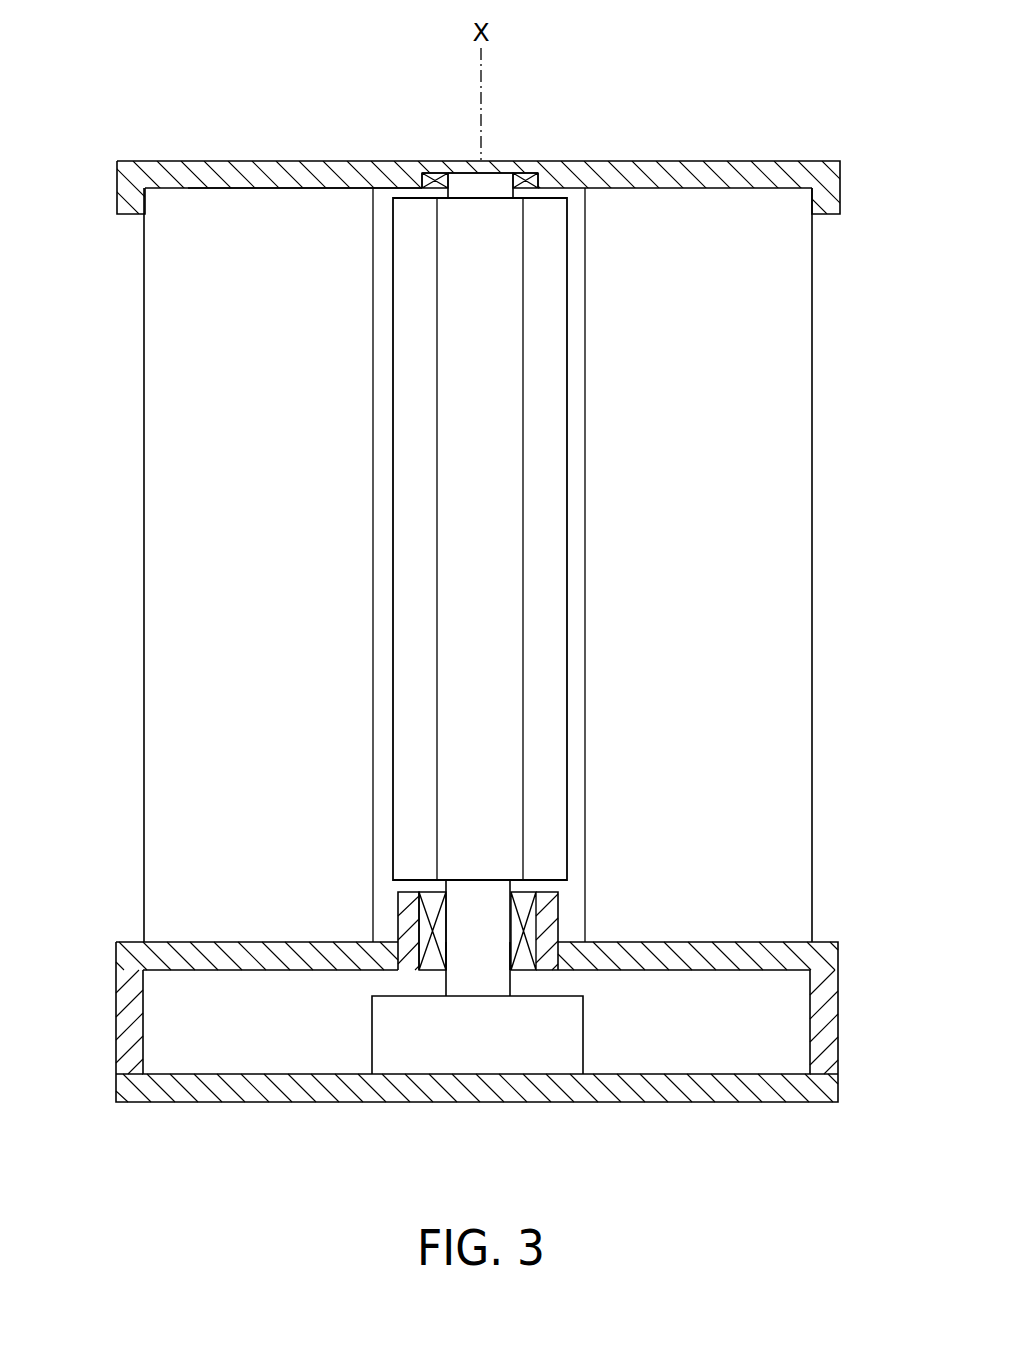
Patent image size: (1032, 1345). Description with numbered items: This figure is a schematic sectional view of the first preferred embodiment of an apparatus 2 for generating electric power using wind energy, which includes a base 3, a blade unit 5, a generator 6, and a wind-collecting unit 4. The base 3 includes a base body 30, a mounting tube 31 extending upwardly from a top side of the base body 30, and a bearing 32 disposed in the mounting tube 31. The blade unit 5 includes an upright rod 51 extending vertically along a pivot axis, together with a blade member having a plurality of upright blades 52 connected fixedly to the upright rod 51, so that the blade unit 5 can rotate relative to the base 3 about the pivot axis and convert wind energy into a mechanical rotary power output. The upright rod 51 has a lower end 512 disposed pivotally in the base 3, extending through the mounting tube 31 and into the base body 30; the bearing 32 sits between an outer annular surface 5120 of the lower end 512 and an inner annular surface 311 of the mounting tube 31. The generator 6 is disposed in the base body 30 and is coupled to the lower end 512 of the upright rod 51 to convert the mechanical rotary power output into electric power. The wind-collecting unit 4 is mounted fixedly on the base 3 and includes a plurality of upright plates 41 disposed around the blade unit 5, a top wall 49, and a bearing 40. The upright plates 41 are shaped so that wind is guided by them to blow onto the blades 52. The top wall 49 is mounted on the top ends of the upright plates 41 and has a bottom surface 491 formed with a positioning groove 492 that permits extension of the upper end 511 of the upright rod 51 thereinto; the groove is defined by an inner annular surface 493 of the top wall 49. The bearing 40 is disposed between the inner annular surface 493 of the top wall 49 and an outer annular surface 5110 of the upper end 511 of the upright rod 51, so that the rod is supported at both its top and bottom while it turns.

The apparatus for generating electric power using wind energy 2 is at (266, 133).
The base 3 is at (122, 926).
The base body 30 is at (830, 975).
The mounting tube 31 is at (403, 910).
The inner annular surface of the mounting tube 311 is at (418, 932).
The bearing 32 is at (532, 925).
The wind-collecting unit 4 is at (118, 345).
The bearing 40 is at (522, 177).
The upright plates 41 is at (153, 597).
The top wall 49 is at (683, 172).
The bottom surface 491 is at (785, 190).
The positioning groove 492 is at (495, 196).
The inner annular surface of the top wall 493 is at (551, 177).
The blade unit 5 is at (570, 568).
The upright rod 51 is at (517, 635).
The upper end of the upright rod 511 is at (463, 175).
The outer annular surface of the upper end 5110 is at (447, 193).
The lower end of the upright rod 512 is at (503, 979).
The outer annular surface of the lower end 5120 is at (511, 915).
The upright blades 52 is at (397, 458).
The generator 6 is at (434, 1050).